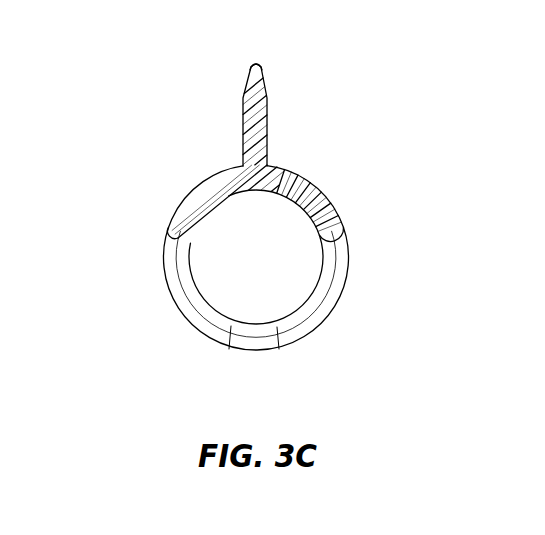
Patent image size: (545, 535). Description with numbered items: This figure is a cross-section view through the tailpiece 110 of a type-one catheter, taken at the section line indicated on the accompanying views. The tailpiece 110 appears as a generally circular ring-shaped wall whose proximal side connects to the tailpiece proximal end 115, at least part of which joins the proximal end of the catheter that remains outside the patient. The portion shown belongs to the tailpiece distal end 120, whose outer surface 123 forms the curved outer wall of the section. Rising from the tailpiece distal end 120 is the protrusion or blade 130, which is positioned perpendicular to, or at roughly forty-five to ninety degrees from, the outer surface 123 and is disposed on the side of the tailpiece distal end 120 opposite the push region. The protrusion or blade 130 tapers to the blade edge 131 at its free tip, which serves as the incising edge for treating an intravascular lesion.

The tailpiece 110 is at (157, 170).
The tailpiece proximal end 115 is at (325, 327).
The tailpiece distal end 120 is at (331, 165).
The outer surface 123 is at (337, 199).
The protrusion or blade 130 is at (273, 120).
The blade edge 131 is at (250, 66).